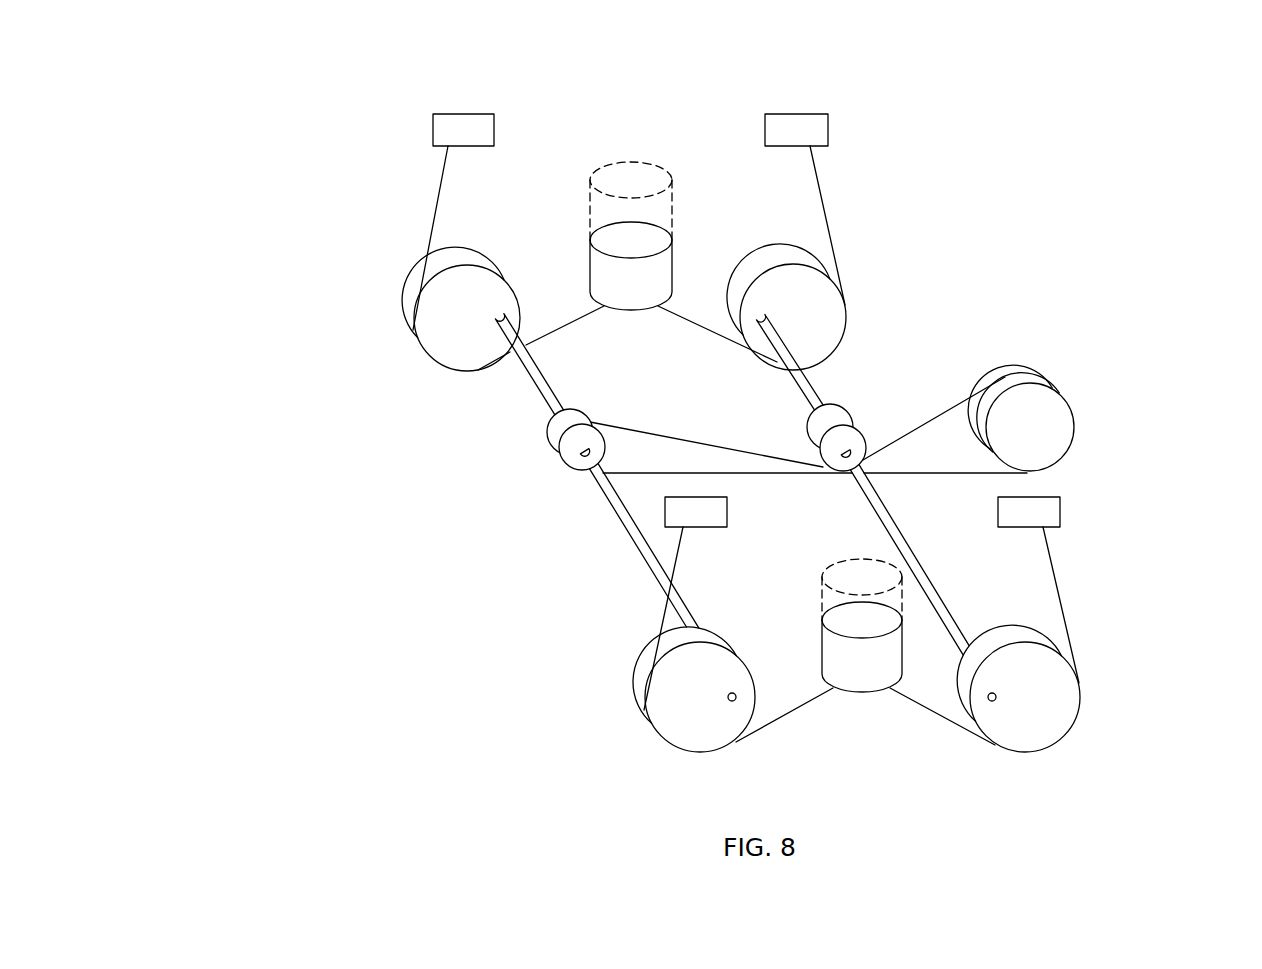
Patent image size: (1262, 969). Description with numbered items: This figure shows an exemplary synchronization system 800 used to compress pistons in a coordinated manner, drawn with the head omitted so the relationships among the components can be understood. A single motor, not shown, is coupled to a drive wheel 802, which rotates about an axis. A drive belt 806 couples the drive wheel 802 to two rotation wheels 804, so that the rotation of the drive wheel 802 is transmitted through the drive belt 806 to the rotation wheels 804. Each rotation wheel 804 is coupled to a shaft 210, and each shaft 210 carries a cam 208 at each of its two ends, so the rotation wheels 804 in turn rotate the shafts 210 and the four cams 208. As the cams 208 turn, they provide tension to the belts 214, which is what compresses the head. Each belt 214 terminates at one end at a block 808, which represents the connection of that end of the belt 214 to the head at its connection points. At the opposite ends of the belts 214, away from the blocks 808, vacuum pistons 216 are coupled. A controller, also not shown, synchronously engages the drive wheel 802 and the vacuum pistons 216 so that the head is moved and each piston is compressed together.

The synchronization system 800 is at (280, 86).
The cam 208 is at (398, 310).
The shaft 210 is at (535, 388).
The belt 214 is at (437, 200).
The vacuum piston 216 is at (645, 150).
The drive wheel 802 is at (1077, 440).
The rotation wheel 804 is at (548, 432).
The drive belt 806 is at (952, 400).
The block 808 is at (430, 130).